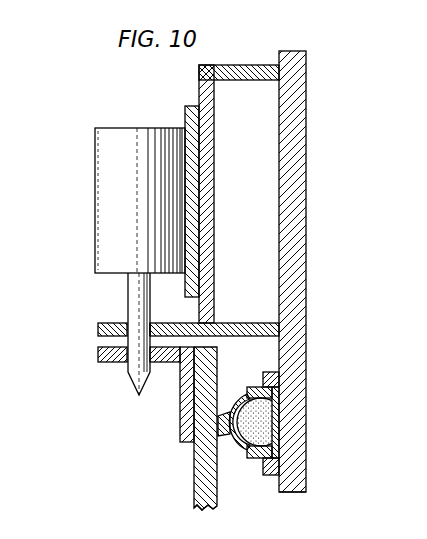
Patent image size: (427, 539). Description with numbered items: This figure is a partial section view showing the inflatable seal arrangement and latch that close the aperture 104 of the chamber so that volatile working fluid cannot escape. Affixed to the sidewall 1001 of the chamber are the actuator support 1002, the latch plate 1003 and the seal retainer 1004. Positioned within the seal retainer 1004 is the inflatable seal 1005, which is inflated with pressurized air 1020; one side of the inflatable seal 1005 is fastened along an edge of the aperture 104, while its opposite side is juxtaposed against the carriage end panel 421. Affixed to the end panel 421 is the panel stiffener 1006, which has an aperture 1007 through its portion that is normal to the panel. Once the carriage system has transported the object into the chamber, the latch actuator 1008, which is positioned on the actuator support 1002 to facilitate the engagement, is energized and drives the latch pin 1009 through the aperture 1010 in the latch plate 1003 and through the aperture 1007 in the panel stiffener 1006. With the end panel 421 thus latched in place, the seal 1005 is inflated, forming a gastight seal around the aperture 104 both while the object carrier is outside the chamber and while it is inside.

The sidewall 1001 is at (308, 110).
The actuator support 1002 is at (245, 65).
The latch plate 1003 is at (98, 333).
The seal retainer 1004 is at (272, 372).
The inflatable seal 1005 is at (283, 425).
The panel stiffener 1006 is at (180, 397).
The aperture 1007 is at (123, 367).
The latch actuator 1008 is at (100, 165).
The latch pin 1009 is at (130, 300).
The aperture 1010 is at (152, 322).
The pressurized air 1020 is at (283, 410).
The carriage end panel 421 is at (203, 483).
The aperture 104 is at (292, 499).